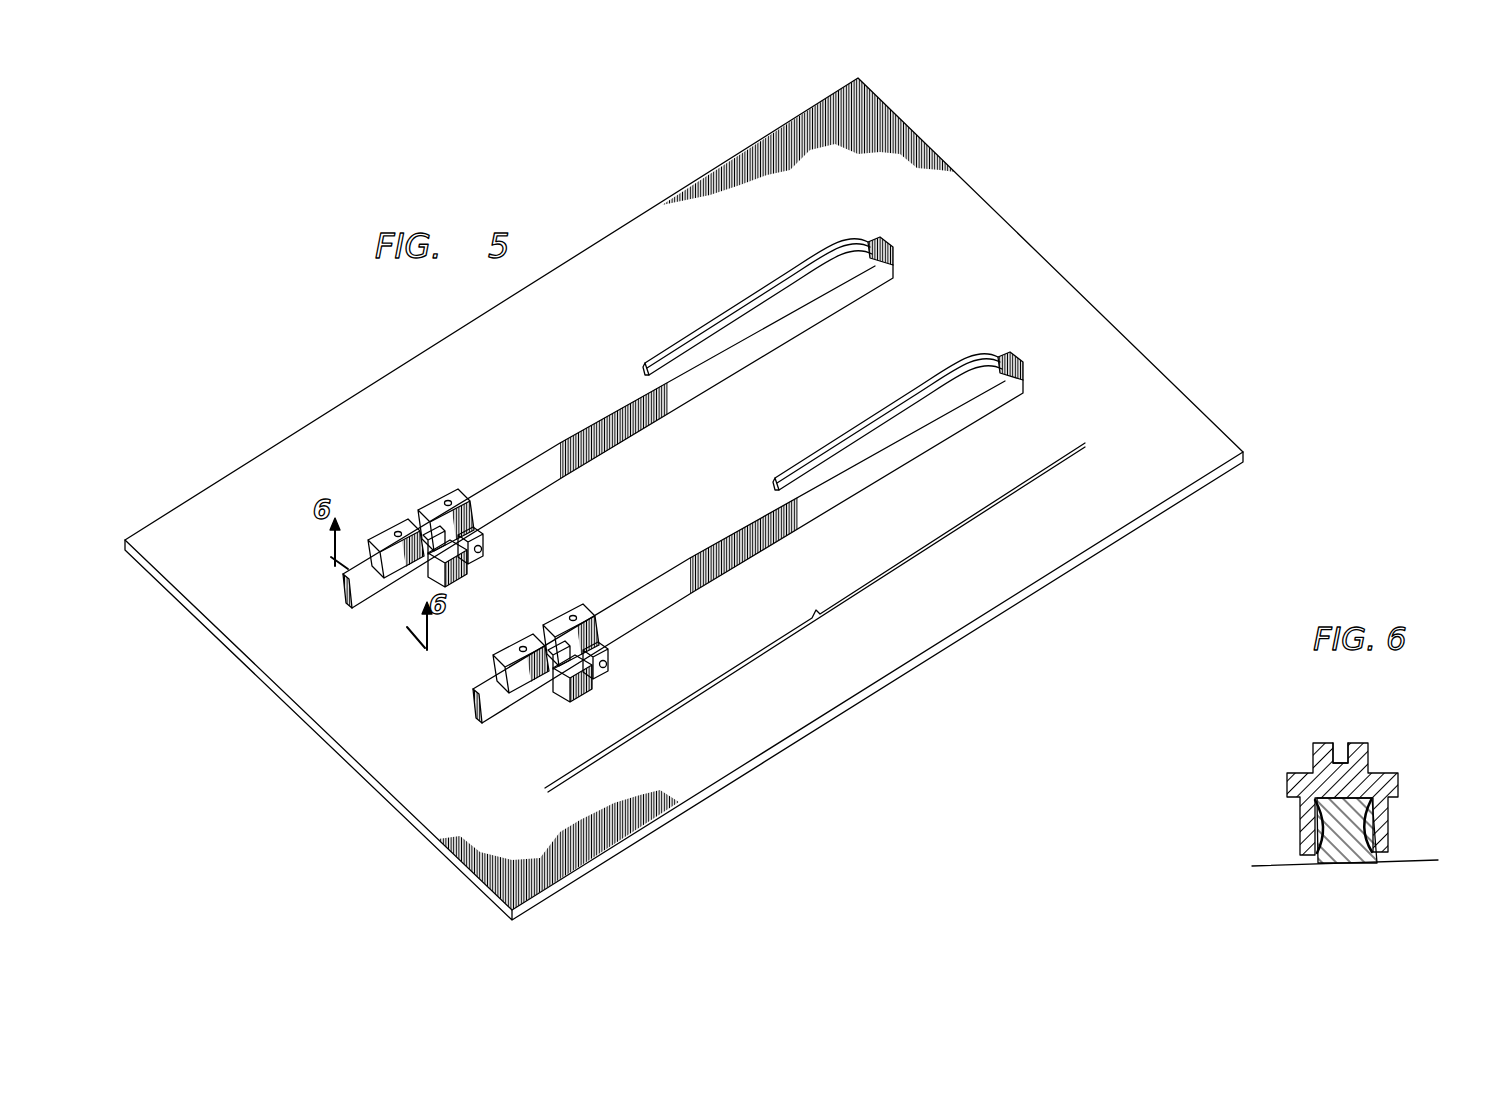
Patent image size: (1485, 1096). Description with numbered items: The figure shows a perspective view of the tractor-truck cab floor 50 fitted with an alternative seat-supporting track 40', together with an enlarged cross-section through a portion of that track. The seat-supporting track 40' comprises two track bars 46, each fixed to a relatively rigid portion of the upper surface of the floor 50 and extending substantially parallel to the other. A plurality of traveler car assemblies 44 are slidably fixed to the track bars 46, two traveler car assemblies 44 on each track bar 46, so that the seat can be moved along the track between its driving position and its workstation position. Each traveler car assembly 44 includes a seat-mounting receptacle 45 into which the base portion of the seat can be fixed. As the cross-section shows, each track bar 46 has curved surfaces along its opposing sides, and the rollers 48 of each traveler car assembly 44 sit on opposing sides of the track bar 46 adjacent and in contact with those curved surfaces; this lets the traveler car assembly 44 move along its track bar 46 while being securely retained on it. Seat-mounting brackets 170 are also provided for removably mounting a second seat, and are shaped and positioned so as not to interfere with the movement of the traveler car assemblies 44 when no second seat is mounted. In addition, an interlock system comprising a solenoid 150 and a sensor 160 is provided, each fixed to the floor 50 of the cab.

In FIG. 5, the floor 50 is at (1050, 272).
In FIG. 6, the floor 50 is at (1425, 857).
In FIG. 5, the seat-supporting track 40' is at (815, 617).
In FIG. 5, the track bar 46 is at (555, 452).
In FIG. 6, the track bar 46 is at (1360, 862).
In FIG. 5, the seat-mounting bracket 170 is at (757, 302).
In FIG. 5, the traveler car assembly 44 is at (462, 490).
In FIG. 6, the traveler car assembly 44 is at (1313, 752).
In FIG. 5, the seat-mounting receptacle 45 is at (445, 499).
In FIG. 6, the seat-mounting receptacle 45 is at (1343, 743).
In FIG. 5, the sensor 160 is at (487, 545).
In FIG. 5, the solenoid 150 is at (470, 566).
In FIG. 6, the roller 48 is at (1318, 828).